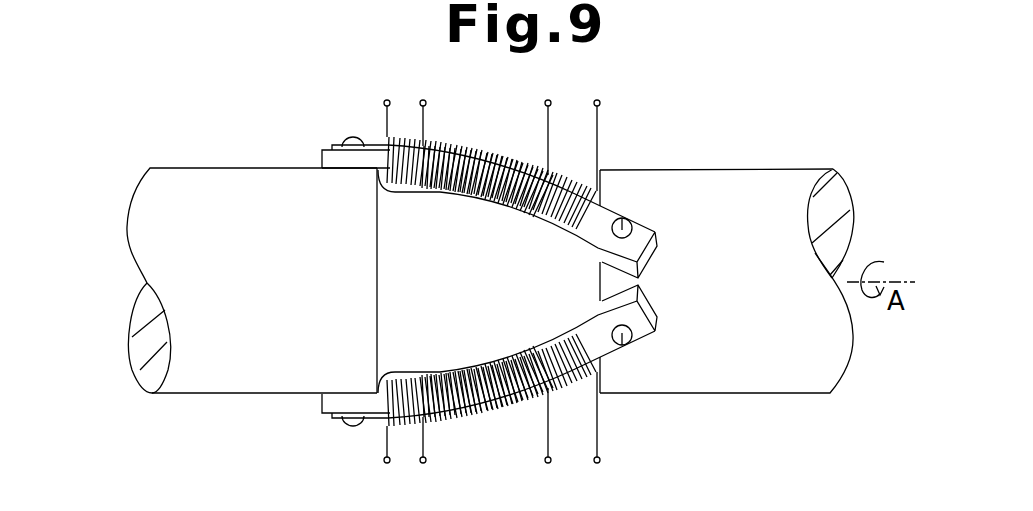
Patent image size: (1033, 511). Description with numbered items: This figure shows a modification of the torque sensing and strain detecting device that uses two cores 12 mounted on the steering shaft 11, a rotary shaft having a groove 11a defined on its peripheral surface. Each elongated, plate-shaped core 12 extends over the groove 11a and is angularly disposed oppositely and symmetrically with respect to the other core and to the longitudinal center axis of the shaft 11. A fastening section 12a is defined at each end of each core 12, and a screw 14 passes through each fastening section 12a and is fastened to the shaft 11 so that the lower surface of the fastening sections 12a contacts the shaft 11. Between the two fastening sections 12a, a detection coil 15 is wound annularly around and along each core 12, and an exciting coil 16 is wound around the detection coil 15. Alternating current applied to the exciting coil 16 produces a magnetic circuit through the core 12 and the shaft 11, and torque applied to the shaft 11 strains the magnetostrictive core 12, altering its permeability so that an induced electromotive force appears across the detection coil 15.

The steering shaft 11 is at (840, 358).
The groove 11a is at (382, 267).
The core 12 is at (613, 205).
The fastening section 12a is at (322, 148).
The screw 14 is at (352, 135).
The detection coil 15 is at (554, 222).
The exciting coil 16 is at (480, 203).